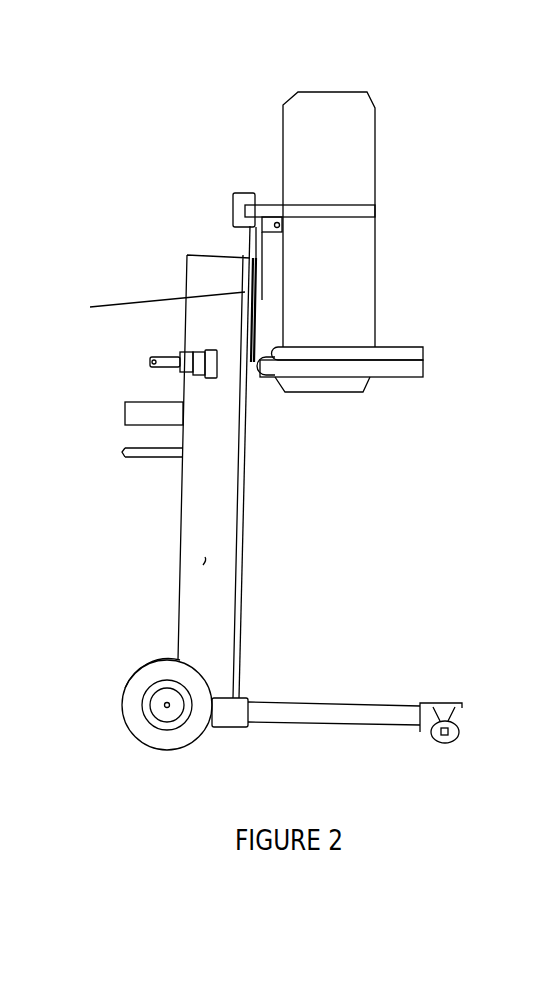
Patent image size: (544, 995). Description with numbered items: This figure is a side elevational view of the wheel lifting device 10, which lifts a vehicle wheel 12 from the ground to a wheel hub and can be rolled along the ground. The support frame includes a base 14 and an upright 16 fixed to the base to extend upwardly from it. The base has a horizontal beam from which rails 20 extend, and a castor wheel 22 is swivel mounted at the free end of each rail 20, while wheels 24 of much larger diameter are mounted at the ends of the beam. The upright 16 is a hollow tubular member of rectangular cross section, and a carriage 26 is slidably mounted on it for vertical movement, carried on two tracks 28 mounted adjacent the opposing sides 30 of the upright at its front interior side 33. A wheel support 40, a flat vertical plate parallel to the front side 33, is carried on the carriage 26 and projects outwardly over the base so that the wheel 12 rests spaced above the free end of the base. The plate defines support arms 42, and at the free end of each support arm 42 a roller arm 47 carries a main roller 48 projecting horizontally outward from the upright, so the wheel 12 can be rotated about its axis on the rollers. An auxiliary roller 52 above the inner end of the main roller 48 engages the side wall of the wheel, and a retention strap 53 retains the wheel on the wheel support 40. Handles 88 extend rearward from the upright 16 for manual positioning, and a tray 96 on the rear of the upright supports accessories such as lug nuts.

The wheel lifting device 10 is at (123, 100).
The wheel 12 is at (360, 165).
The base 14 is at (324, 652).
The upright 16 is at (198, 503).
The rail 20 is at (317, 712).
The castor wheel 22 is at (460, 735).
The wheel 24 is at (165, 743).
The carriage 26 is at (145, 313).
The track 28 is at (245, 458).
The side of the upright 30 is at (203, 565).
The front interior side of the upright 33 is at (252, 522).
The wheel support 40 is at (269, 156).
The support arm 42 is at (258, 352).
The roller arm 47 is at (342, 368).
The main roller 48 is at (400, 357).
The auxiliary roller 52 is at (283, 223).
The retention strap 53 is at (348, 205).
The handle 88 is at (160, 358).
The tray 96 is at (148, 412).